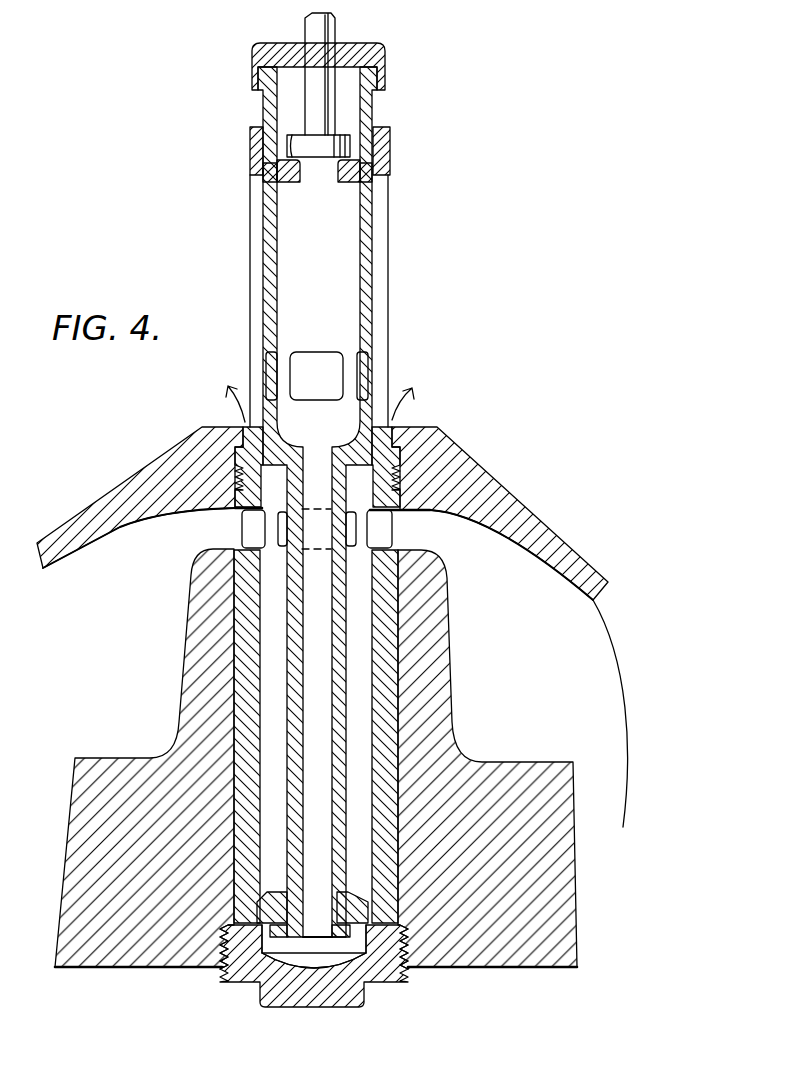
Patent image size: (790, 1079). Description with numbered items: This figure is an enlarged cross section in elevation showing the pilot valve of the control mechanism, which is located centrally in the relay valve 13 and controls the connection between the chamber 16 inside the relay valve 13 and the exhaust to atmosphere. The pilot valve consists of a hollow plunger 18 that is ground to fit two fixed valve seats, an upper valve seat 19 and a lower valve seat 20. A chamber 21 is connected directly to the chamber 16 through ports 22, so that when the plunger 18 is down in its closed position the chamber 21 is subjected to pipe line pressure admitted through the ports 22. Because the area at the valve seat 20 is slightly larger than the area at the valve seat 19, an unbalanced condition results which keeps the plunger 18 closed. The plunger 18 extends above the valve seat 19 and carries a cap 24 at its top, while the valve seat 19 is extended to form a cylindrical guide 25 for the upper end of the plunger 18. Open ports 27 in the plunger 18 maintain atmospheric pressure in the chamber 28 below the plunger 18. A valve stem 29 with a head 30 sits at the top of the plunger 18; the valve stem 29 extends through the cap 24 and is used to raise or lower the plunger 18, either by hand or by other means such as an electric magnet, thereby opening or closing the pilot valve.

The relay valve 13 is at (562, 846).
The chamber 16 is at (92, 583).
The hollow plunger 18 is at (370, 275).
The valve seat 19 is at (400, 453).
The valve seat 20 is at (363, 923).
The chamber 21 is at (355, 705).
The ports 22 is at (383, 520).
The cap 24 is at (387, 80).
The cylindrical guide 25 is at (386, 190).
The open ports 27 is at (367, 368).
The chamber 28 is at (323, 940).
The valve stem 29 is at (304, 23).
The head 30 is at (302, 143).